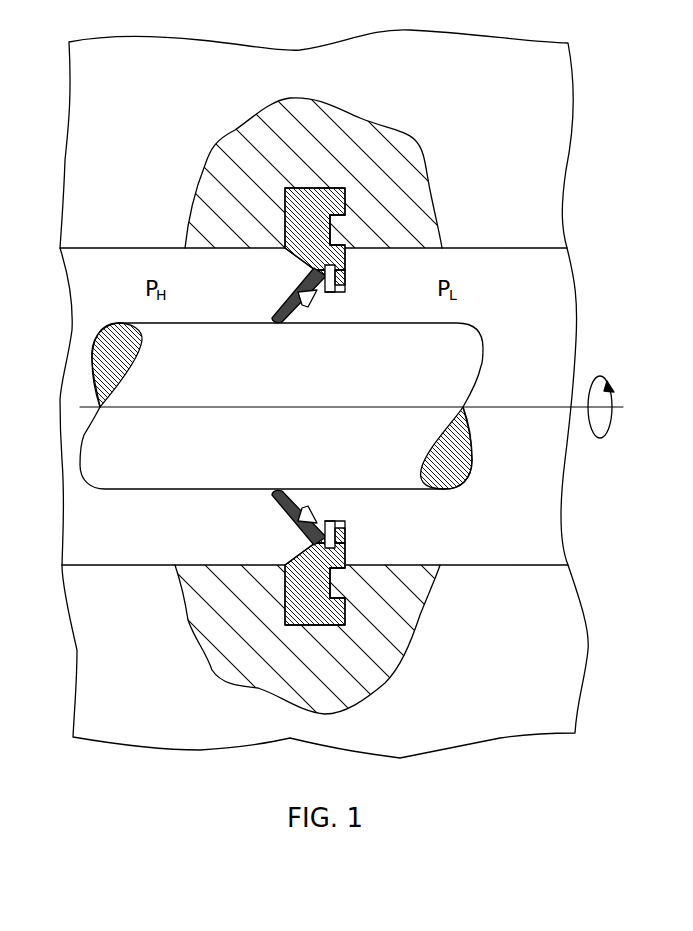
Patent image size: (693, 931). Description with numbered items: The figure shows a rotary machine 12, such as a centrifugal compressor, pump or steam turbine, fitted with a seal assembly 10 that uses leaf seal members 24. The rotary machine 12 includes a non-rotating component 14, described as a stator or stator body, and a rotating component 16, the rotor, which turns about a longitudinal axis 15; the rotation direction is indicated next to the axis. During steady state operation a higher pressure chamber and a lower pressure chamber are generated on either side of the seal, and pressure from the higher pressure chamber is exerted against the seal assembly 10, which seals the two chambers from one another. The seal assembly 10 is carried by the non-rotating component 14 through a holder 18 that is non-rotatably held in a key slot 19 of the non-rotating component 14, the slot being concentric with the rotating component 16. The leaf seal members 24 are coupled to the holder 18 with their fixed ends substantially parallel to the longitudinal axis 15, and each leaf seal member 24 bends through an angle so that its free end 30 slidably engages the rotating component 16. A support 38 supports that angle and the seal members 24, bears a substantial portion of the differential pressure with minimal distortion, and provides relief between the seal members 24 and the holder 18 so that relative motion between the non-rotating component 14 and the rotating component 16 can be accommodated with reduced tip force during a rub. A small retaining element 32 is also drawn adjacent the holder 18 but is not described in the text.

The seal assembly 10 is at (329, 406).
The rotary machine 12 is at (574, 170).
The non-rotating component 14 is at (410, 165).
The longitudinal axis 15 is at (577, 408).
The rotating component 16 is at (178, 473).
The holder 18 is at (345, 207).
The key slot 19 is at (340, 233).
The leaf seal member 24 is at (282, 285).
The free end 30 is at (287, 301).
The retainer 32 is at (338, 279).
The support 38 is at (310, 298).